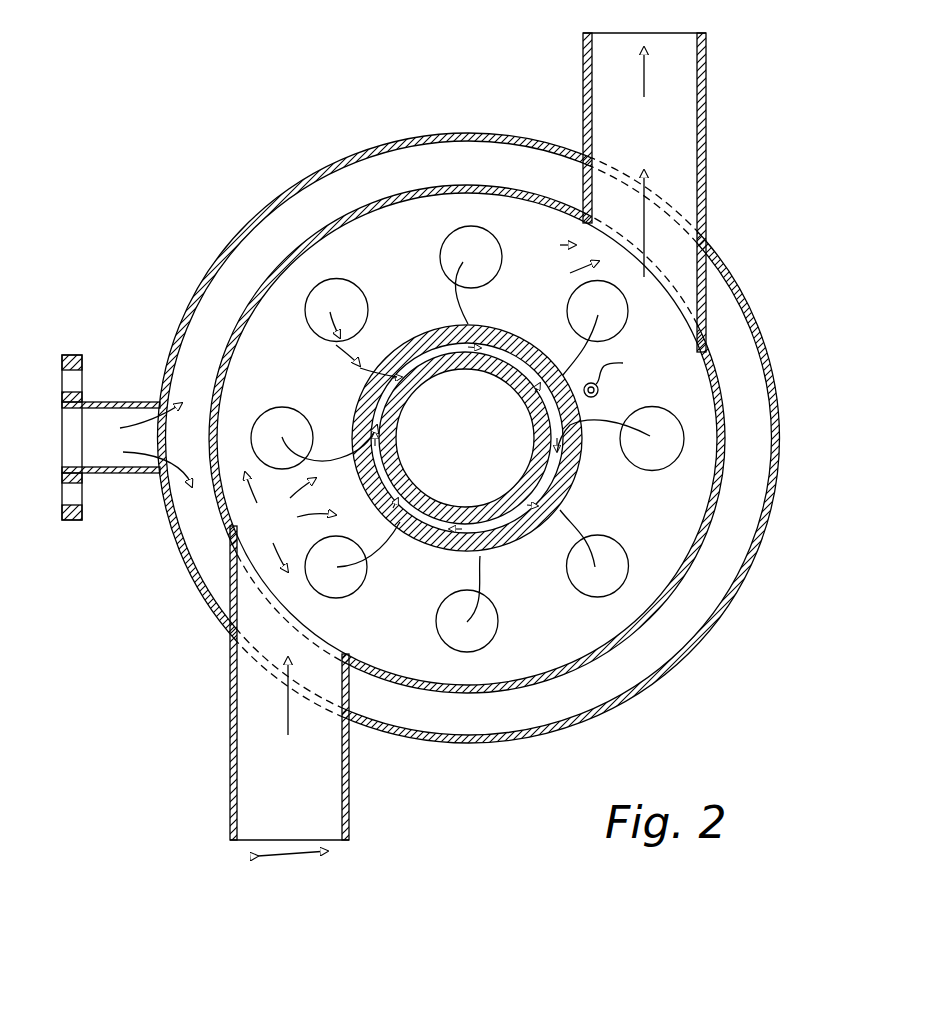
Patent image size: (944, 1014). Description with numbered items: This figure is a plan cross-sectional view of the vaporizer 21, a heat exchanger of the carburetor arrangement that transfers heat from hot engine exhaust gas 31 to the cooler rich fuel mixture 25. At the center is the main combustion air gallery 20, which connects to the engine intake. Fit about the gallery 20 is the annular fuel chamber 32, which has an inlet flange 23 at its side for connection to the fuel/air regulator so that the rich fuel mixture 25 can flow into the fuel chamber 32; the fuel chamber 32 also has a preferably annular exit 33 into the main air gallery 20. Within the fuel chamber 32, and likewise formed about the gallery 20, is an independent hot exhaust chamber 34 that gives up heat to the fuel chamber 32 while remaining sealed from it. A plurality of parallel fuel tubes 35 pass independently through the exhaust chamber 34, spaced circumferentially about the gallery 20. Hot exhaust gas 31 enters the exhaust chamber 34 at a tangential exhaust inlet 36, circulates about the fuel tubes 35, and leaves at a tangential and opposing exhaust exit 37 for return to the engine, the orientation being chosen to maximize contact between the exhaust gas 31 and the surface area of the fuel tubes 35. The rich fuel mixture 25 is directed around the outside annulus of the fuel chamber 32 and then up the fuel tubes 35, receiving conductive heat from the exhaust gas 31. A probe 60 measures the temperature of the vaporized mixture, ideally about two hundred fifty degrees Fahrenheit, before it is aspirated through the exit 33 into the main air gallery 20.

The main combustion air gallery 20 is at (545, 398).
The vaporizer 21 is at (163, 212).
The inlet flange 23 is at (82, 372).
The rich fuel mixture 25 is at (352, 322).
The hot exhaust gas 31 is at (645, 97).
The fuel chamber 32 is at (290, 190).
The exit 33 is at (573, 483).
The exhaust chamber 34 is at (433, 185).
The fuel tubes 35 is at (460, 266).
The exhaust inlet 36 is at (230, 775).
The exhaust exit 37 is at (703, 207).
The probe 60 is at (600, 389).